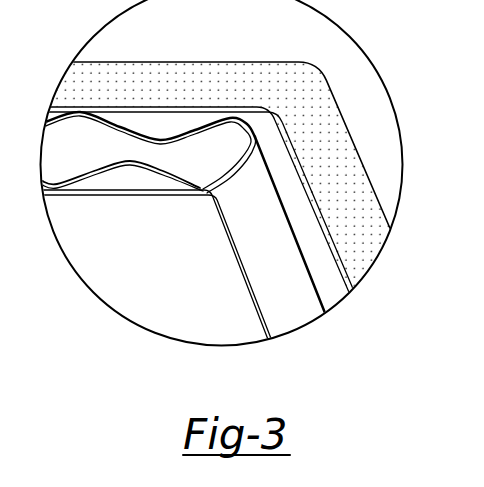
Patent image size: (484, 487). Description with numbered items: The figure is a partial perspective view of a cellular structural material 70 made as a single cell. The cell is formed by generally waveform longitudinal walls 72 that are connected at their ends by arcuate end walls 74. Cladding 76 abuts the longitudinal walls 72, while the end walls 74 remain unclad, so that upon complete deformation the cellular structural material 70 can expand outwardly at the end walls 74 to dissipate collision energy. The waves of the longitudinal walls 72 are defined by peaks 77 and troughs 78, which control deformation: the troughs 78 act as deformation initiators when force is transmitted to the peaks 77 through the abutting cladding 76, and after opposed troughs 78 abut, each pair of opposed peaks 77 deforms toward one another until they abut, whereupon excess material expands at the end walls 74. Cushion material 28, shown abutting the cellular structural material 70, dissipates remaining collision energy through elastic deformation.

The cushion material 28 is at (208, 75).
The cellular structural material 70 is at (333, 240).
The longitudinal walls 72 is at (117, 179).
The end walls 74 is at (287, 305).
The cladding 76 is at (340, 267).
The peaks 77 is at (65, 188).
The troughs 78 is at (152, 166).